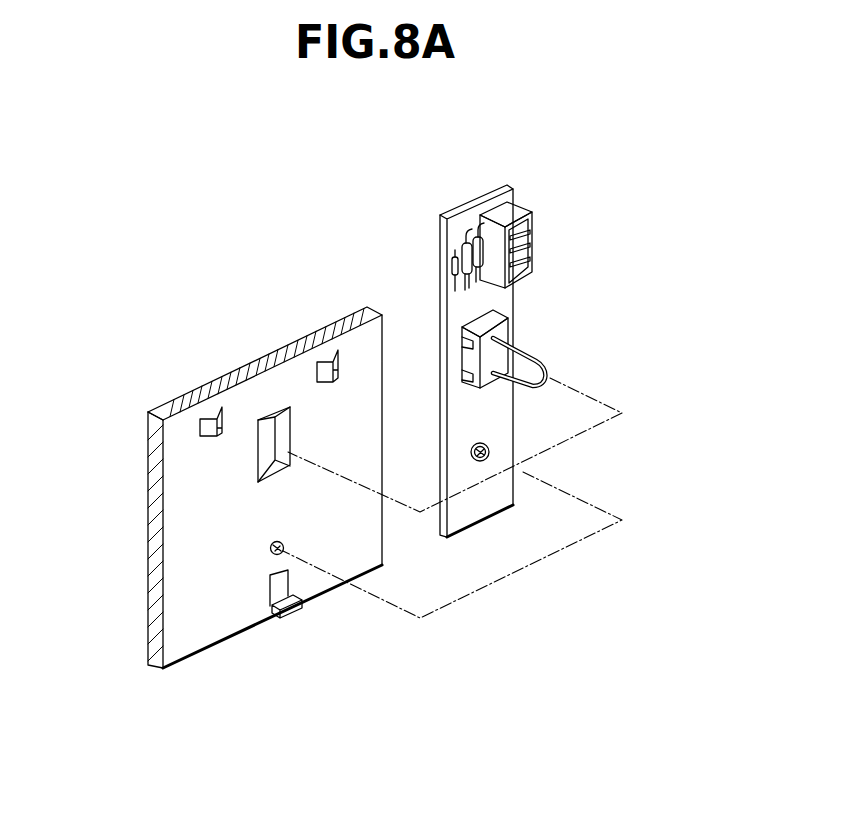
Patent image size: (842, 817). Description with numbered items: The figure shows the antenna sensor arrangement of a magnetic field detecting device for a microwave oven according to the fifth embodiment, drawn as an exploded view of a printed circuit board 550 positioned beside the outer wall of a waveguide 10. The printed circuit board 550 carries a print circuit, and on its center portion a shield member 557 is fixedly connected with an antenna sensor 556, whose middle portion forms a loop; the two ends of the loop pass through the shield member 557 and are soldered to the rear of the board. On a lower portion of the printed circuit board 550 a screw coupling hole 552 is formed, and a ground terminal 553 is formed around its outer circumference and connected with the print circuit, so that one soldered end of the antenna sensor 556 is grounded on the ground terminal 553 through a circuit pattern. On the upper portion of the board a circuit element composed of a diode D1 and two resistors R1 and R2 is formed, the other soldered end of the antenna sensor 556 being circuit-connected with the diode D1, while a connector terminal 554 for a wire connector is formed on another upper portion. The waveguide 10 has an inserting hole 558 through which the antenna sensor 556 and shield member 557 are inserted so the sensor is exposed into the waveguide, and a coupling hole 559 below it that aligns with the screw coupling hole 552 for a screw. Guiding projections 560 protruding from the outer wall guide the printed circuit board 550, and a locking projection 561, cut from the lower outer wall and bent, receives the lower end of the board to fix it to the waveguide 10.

The waveguide 10 is at (183, 435).
The printed circuit board 550 is at (507, 186).
The screw coupling hole 552 is at (490, 448).
The ground terminal 553 is at (480, 466).
The connector terminal 554 is at (532, 243).
The antenna sensor 556 is at (543, 366).
The shield member 557 is at (493, 350).
The inserting hole 558 is at (268, 428).
The coupling hole 559 is at (277, 557).
The guiding projection 560 is at (203, 420).
The locking projection 561 is at (297, 608).
The resistor R1 is at (467, 253).
The resistor R2 is at (457, 232).
The diode D1 is at (457, 290).